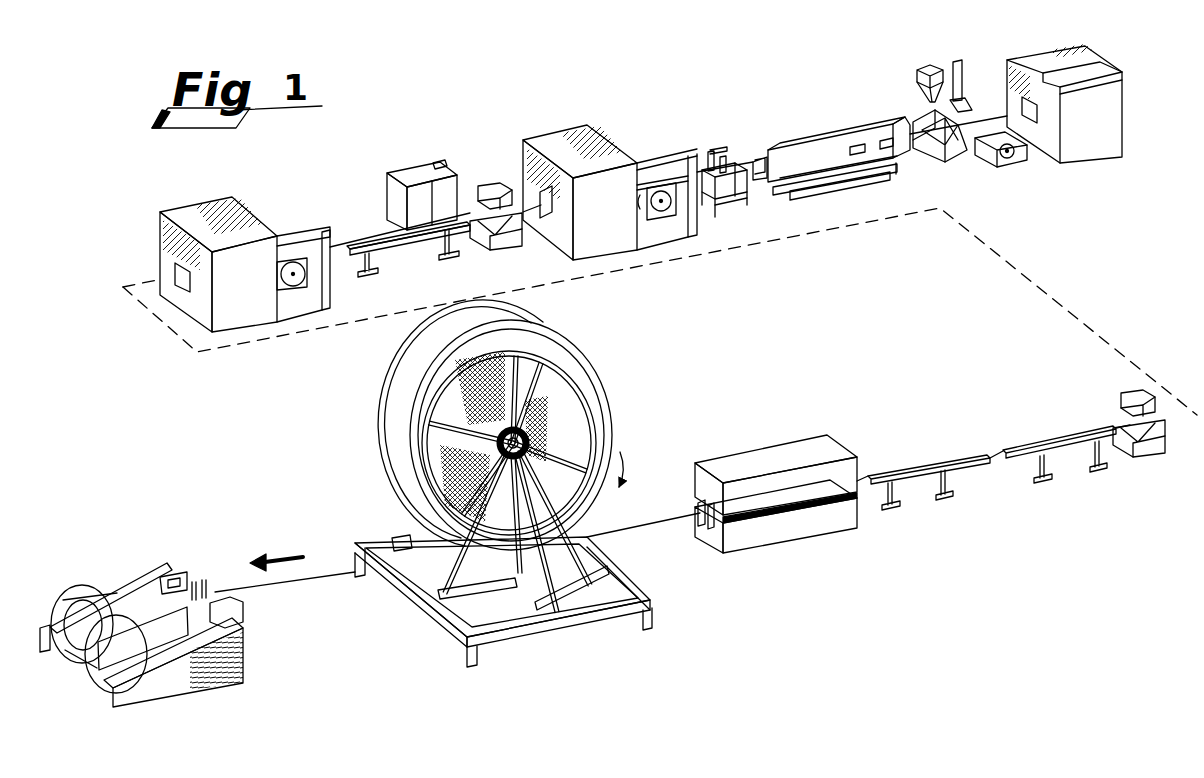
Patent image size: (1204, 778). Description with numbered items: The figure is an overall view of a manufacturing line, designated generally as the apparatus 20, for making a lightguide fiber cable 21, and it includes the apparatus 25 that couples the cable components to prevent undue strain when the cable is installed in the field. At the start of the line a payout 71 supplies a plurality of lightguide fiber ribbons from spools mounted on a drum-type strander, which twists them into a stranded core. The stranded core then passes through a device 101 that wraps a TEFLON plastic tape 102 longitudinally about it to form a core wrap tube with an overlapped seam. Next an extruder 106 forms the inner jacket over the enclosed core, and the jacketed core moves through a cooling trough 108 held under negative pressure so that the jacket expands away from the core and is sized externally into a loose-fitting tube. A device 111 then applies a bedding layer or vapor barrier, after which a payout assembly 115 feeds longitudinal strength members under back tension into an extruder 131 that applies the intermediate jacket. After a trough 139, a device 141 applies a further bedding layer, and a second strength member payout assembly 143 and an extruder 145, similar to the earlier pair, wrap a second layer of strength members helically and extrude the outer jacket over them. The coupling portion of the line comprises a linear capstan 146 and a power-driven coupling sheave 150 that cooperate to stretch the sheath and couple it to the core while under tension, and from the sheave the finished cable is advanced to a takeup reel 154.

The apparatus 20 is at (898, 623).
The cable 21 is at (282, 590).
The apparatus for coupling the components of the cable 25 is at (773, 563).
The payout 71 is at (1105, 167).
The device 101 is at (1013, 163).
The plastic tape 102 is at (967, 137).
The extruder 106 is at (940, 160).
The cooling trough 108 is at (843, 130).
The device 111 is at (673, 207).
The payout assembly 115 is at (620, 254).
The extruder 131 is at (518, 213).
The trough 139 is at (372, 247).
The device 141 is at (296, 287).
The second strength member payout assembly 143 is at (230, 328).
The extruder 145 is at (1130, 403).
The linear capstan 146 is at (755, 450).
The coupling sheave 150 is at (616, 396).
The takeup reel 154 is at (104, 576).